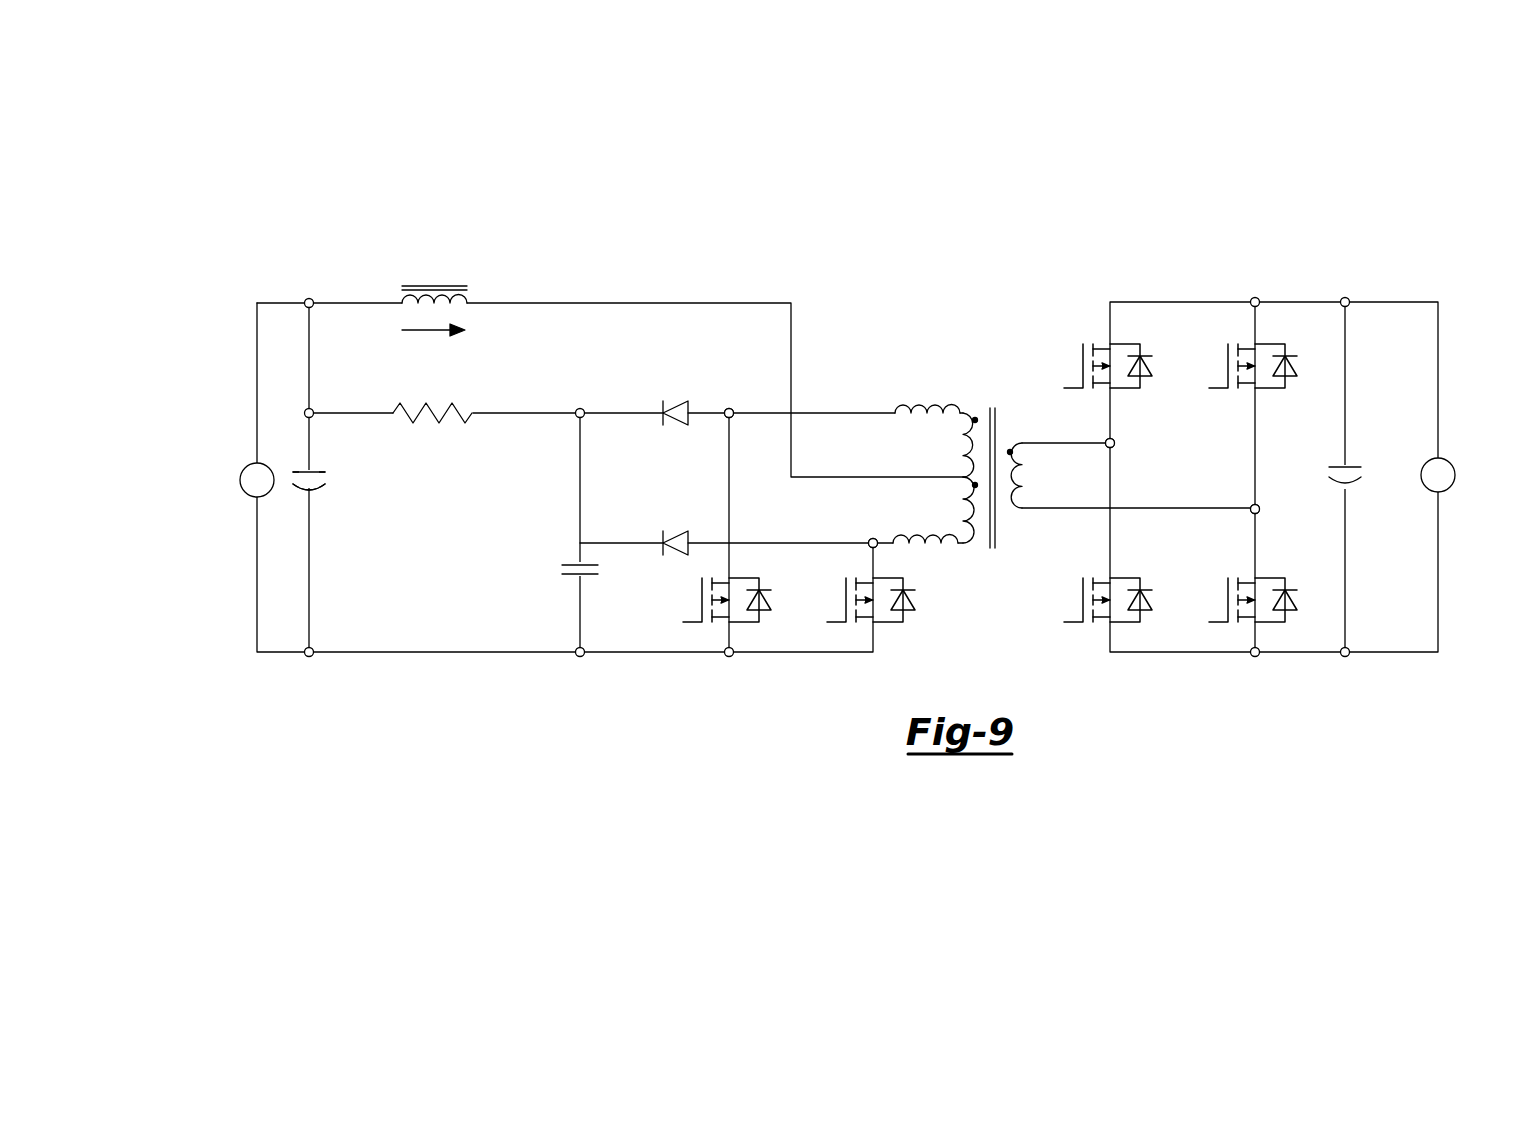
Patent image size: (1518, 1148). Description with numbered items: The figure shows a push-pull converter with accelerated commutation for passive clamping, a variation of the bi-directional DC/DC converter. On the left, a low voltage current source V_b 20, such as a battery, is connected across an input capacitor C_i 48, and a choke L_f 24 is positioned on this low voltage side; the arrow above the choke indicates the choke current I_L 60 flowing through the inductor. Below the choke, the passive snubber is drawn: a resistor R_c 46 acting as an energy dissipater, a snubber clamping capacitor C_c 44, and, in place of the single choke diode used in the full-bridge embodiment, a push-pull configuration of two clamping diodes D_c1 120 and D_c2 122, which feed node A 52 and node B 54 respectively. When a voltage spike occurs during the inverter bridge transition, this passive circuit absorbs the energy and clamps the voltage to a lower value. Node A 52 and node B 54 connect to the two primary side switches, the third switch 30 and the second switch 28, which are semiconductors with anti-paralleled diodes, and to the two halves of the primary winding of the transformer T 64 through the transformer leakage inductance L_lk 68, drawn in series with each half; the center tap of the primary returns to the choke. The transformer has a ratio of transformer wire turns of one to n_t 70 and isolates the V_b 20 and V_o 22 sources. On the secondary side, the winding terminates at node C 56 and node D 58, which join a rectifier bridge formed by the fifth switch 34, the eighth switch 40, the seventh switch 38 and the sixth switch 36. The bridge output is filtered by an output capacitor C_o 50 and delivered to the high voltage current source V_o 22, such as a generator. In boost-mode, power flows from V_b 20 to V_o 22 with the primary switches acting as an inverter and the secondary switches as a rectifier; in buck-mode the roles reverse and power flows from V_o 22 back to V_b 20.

The V_b low voltage current source 20 is at (205, 443).
The V_o high voltage current source 22 is at (1490, 443).
The choke L_f 24 is at (368, 333).
The choke current I_L 60 is at (445, 365).
The resistor R_c 46 is at (432, 470).
The input capacitor C_i 48 is at (343, 528).
The snubber clamping capacitor C_c 44 is at (560, 558).
The clamping diode D_c1 120 is at (650, 375).
The clamping diode D_c2 122 is at (655, 520).
The node A 52 is at (742, 384).
The node B 54 is at (857, 498).
The switch S3 30 is at (678, 608).
The switch S2 28 is at (828, 605).
The transformer leakage inductance L_lk 68 is at (933, 370).
The transformer T 64 is at (993, 370).
The ratio of transformer wire turns 1:n_t 70 is at (997, 590).
The switch S5 34 is at (1076, 345).
The switch S8 40 is at (1222, 350).
The switch S7 38 is at (1080, 597).
The switch S6 36 is at (1200, 612).
The node C 56 is at (1143, 450).
The node D 58 is at (1285, 522).
The output capacitor C_o 50 is at (1380, 460).